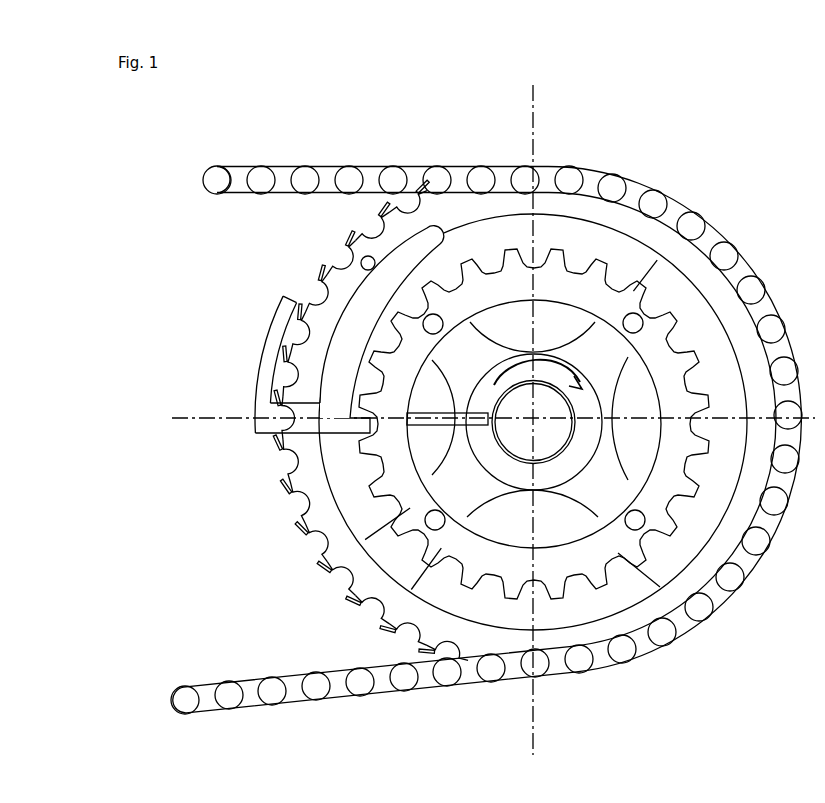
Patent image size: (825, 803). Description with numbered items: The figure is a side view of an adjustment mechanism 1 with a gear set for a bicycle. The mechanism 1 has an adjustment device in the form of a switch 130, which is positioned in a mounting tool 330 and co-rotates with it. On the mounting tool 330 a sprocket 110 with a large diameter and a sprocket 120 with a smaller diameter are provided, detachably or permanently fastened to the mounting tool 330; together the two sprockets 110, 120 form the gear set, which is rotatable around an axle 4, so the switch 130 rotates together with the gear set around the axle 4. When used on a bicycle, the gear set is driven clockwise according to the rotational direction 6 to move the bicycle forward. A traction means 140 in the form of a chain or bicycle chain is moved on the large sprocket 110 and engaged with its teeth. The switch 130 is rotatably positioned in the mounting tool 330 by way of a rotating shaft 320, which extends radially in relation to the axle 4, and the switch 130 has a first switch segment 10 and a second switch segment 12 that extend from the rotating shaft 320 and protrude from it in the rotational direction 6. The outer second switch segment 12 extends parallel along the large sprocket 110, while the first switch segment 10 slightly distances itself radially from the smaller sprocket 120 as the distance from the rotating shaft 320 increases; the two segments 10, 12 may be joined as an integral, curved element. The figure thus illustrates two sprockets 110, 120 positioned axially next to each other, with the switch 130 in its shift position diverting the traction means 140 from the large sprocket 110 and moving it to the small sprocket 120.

The adjustment mechanism 1 is at (616, 102).
The axle 4 is at (536, 419).
The rotational direction 6 is at (550, 361).
The first switch segment 10 is at (410, 250).
The second switch segment 12 is at (275, 330).
The sprocket 110 is at (395, 216).
The sprocket 120 is at (407, 357).
The switch 130 is at (268, 360).
The traction means 140 is at (340, 688).
The rotating shaft 320 is at (293, 424).
The mounting tool 330 is at (668, 285).